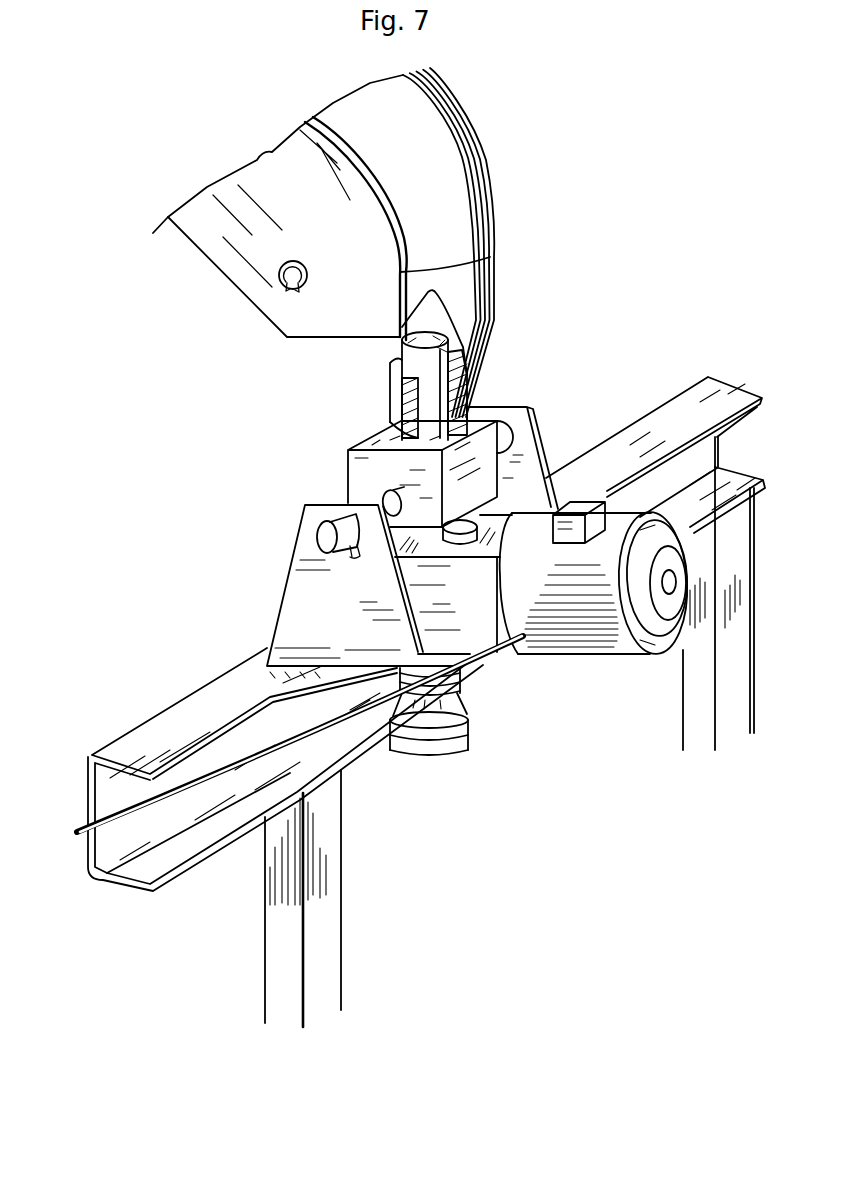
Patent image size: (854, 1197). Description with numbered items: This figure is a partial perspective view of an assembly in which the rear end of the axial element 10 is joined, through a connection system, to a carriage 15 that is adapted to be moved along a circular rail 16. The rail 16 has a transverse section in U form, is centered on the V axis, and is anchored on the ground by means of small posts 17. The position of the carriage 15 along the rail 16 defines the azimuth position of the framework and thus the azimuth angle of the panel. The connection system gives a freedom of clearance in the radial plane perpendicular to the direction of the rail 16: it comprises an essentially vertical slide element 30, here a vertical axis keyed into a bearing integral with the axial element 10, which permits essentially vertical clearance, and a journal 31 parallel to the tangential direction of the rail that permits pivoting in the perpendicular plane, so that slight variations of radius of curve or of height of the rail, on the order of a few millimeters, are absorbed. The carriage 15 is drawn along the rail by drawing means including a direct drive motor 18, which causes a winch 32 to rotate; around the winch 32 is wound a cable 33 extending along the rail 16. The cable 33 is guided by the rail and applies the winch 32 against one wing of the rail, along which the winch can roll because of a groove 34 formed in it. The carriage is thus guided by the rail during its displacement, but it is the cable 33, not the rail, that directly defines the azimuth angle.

The axial element 10 is at (413, 142).
The carriage 15 is at (585, 432).
The circular rail 16 is at (195, 712).
The small posts 17 is at (315, 933).
The direct drive motor 18 is at (606, 612).
The vertical slide element 30 is at (433, 356).
The journal 31 is at (385, 497).
The winch 32 is at (450, 713).
The cable 33 is at (360, 732).
The groove 34 is at (468, 732).